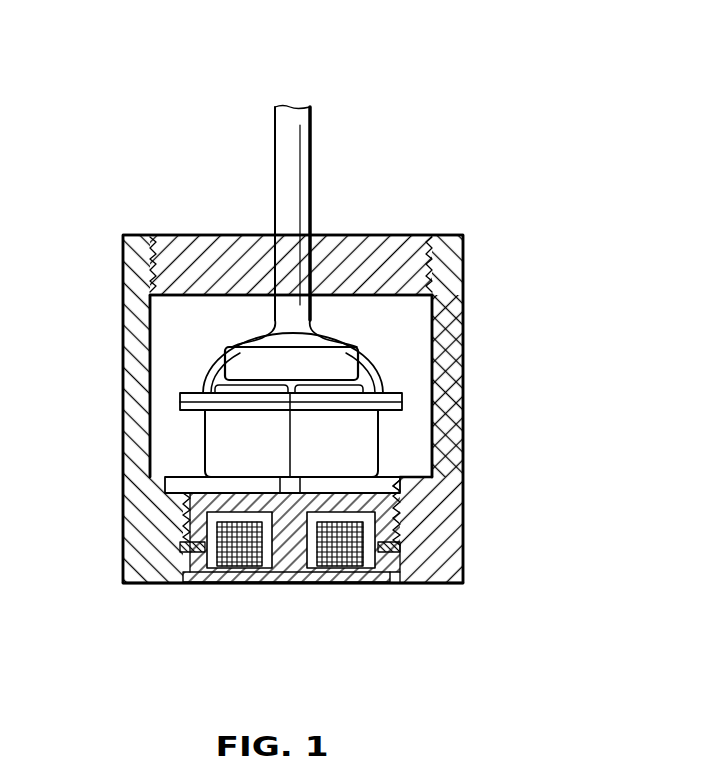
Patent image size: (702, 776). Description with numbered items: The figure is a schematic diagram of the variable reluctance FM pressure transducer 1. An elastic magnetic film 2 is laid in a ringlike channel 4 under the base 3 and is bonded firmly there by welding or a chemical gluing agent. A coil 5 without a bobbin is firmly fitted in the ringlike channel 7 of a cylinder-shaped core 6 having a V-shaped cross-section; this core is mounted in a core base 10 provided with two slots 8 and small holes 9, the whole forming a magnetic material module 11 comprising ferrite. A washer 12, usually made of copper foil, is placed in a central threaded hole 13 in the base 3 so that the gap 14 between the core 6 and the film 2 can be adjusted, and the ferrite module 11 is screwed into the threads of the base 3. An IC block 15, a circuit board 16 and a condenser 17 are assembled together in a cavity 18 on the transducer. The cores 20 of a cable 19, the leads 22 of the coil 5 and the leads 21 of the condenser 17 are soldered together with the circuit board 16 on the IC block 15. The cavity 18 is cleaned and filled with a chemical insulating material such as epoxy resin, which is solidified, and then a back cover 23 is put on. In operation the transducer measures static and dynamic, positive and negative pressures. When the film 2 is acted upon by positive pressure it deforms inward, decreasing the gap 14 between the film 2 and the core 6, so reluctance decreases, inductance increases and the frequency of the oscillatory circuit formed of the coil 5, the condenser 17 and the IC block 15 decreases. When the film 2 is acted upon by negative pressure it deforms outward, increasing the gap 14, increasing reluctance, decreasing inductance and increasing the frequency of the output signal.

The pressure transducer 1 is at (497, 92).
The elastic magnetic film 2 is at (367, 580).
The base 3 is at (455, 502).
The ringlike channel 4 is at (393, 575).
The coil 5 is at (245, 567).
The cylinder-shaped core 6 is at (418, 467).
The ringlike channel of core 7 is at (395, 490).
The slots 8 is at (273, 475).
The small holes 9 is at (290, 440).
The core base 10 is at (203, 482).
The magnetic material module 11 is at (187, 520).
The washer 12 is at (405, 525).
The central threaded hole 13 is at (180, 547).
The gap 14 is at (303, 572).
The IC block 15 is at (368, 420).
The circuit board 16 is at (360, 397).
The condenser 17 is at (352, 352).
The cavity 18 is at (243, 337).
The cable 19 is at (294, 188).
The cores of cable 20 is at (247, 308).
The leads of condenser 21 is at (220, 372).
The leads of coil 22 is at (210, 393).
The back cover 23 is at (391, 250).